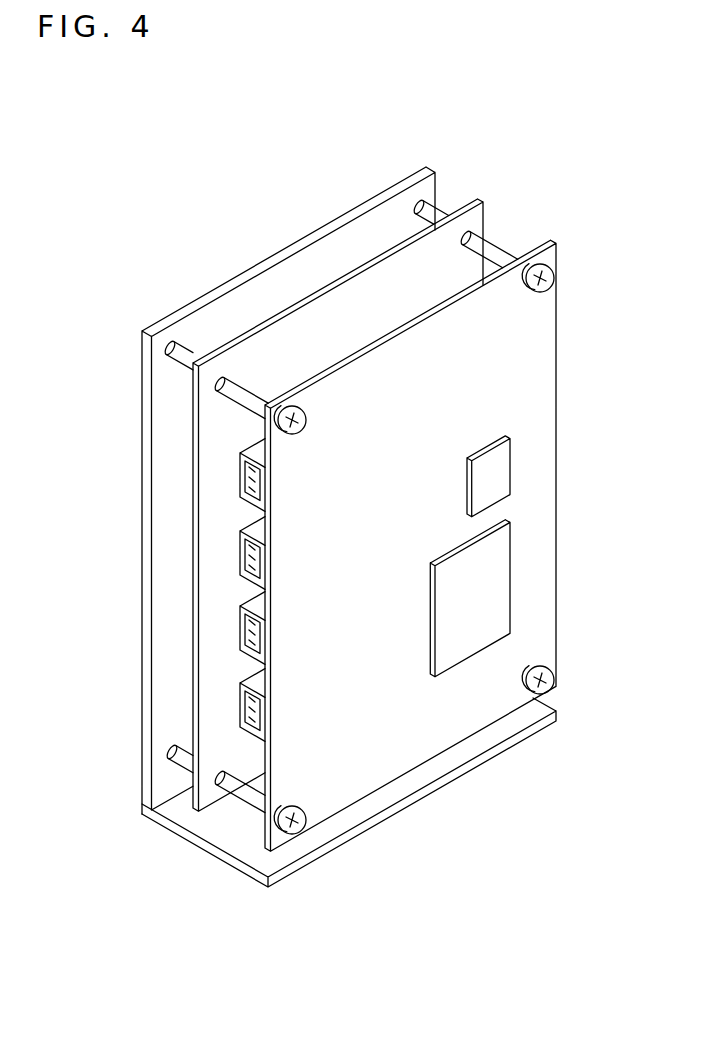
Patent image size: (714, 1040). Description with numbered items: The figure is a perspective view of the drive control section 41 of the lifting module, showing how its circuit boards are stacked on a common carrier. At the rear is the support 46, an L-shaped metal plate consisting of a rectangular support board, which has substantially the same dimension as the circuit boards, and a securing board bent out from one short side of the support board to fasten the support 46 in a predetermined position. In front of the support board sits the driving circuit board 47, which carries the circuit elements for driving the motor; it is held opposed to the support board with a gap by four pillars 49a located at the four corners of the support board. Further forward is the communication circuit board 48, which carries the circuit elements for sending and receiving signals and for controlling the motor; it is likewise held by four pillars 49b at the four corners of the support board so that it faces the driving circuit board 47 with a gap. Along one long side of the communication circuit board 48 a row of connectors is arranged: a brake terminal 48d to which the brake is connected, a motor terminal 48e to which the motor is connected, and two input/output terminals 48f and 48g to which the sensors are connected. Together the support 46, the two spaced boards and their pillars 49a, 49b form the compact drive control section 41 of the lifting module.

The drive control section 41 is at (214, 225).
The support 46 is at (428, 167).
The driving circuit board 47 is at (482, 198).
The communication circuit board 48 is at (554, 242).
The pillar 49a is at (167, 351).
The pillar 49b is at (506, 240).
The brake terminal 48d is at (238, 478).
The motor terminal 48e is at (238, 553).
The input/output terminal 48f is at (238, 625).
The input/output terminal 48g is at (238, 699).